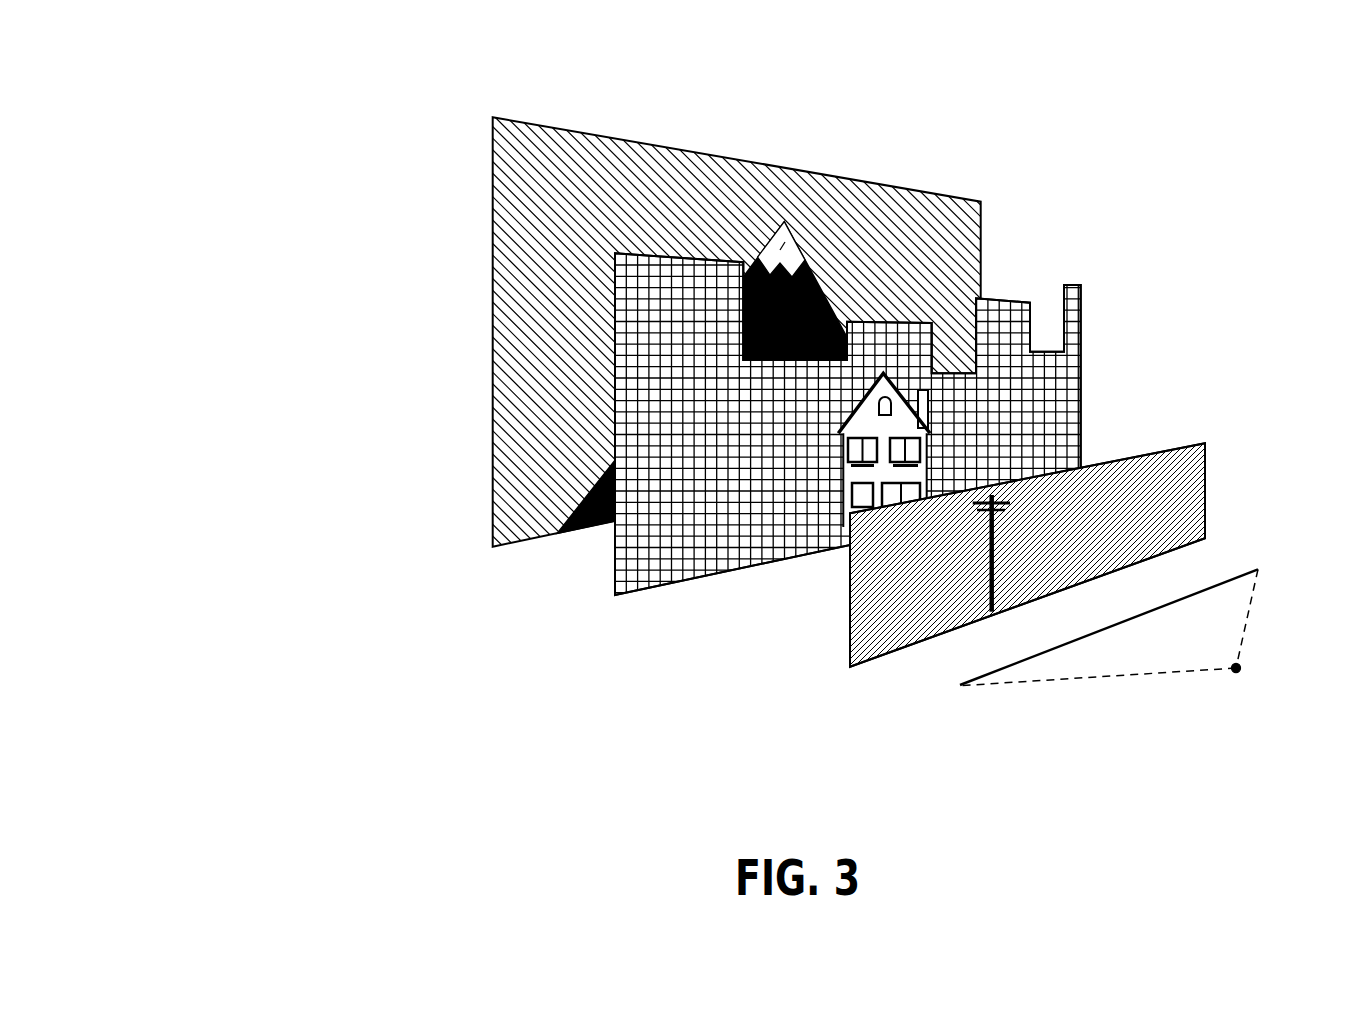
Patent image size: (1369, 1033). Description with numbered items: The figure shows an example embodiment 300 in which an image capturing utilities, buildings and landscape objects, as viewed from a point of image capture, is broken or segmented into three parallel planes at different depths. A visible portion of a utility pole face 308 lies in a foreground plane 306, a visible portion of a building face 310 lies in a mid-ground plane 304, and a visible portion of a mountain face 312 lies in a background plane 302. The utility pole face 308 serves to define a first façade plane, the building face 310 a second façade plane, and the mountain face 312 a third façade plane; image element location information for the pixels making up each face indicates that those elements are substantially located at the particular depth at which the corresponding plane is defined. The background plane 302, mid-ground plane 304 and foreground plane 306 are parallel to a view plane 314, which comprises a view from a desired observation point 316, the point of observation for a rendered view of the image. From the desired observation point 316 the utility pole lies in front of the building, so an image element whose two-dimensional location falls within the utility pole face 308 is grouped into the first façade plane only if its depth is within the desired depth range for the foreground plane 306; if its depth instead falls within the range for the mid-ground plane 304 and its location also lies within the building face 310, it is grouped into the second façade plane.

The example embodiment 300 is at (242, 66).
The background plane 302 is at (492, 505).
The mid-ground plane 304 is at (1081, 388).
The foreground plane 306 is at (1205, 503).
The utility pole face 308 is at (988, 592).
The building face 310 is at (906, 395).
The mountain face 312 is at (783, 243).
The view plane 314 is at (1223, 580).
The desired observation point 316 is at (1238, 673).